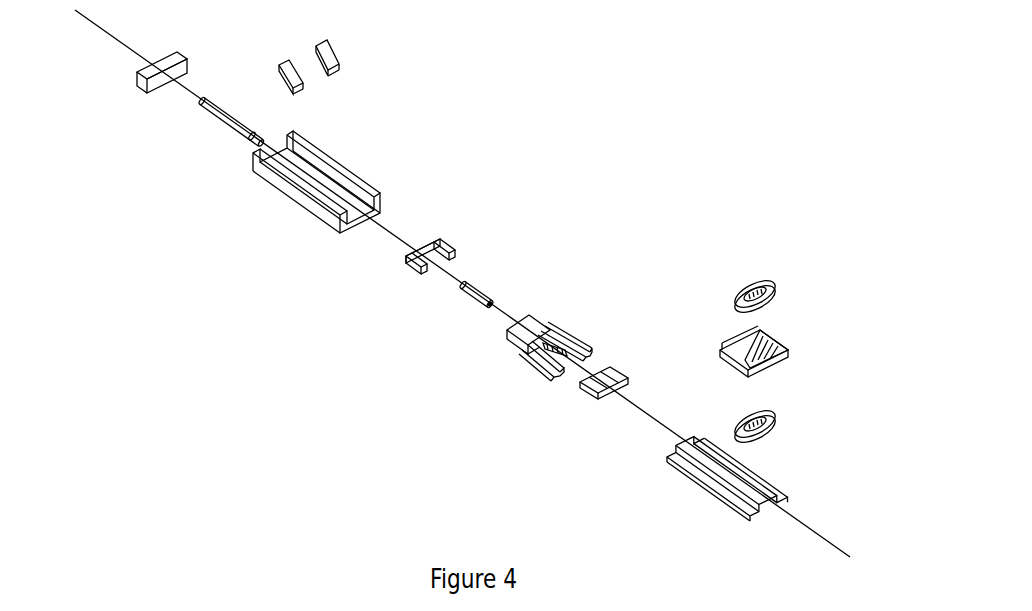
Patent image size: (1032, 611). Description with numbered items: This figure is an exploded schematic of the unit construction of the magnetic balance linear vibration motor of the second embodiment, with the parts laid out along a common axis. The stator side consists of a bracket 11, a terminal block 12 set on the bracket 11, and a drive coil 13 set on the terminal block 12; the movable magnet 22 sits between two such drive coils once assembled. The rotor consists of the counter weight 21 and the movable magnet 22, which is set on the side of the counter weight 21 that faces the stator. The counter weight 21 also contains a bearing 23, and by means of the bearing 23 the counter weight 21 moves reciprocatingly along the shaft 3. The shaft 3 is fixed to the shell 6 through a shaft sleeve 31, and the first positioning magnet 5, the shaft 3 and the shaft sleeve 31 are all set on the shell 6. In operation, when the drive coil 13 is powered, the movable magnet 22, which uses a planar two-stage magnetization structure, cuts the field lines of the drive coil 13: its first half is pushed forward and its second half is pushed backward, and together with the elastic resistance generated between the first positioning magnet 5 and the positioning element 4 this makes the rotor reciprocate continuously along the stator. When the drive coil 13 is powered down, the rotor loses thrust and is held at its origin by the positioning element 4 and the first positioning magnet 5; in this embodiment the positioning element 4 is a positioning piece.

The shaft sleeve 31 is at (180, 53).
The shaft 3 is at (208, 102).
The first positioning magnet 5 is at (301, 87).
The shell 6 is at (358, 177).
The positioning element 4 is at (427, 243).
The bearing 23 is at (470, 279).
The counter weight 21 is at (530, 316).
The movable magnet 22 is at (607, 366).
The drive coil 13 is at (740, 417).
The terminal block 12 is at (792, 357).
The bracket 11 is at (676, 453).